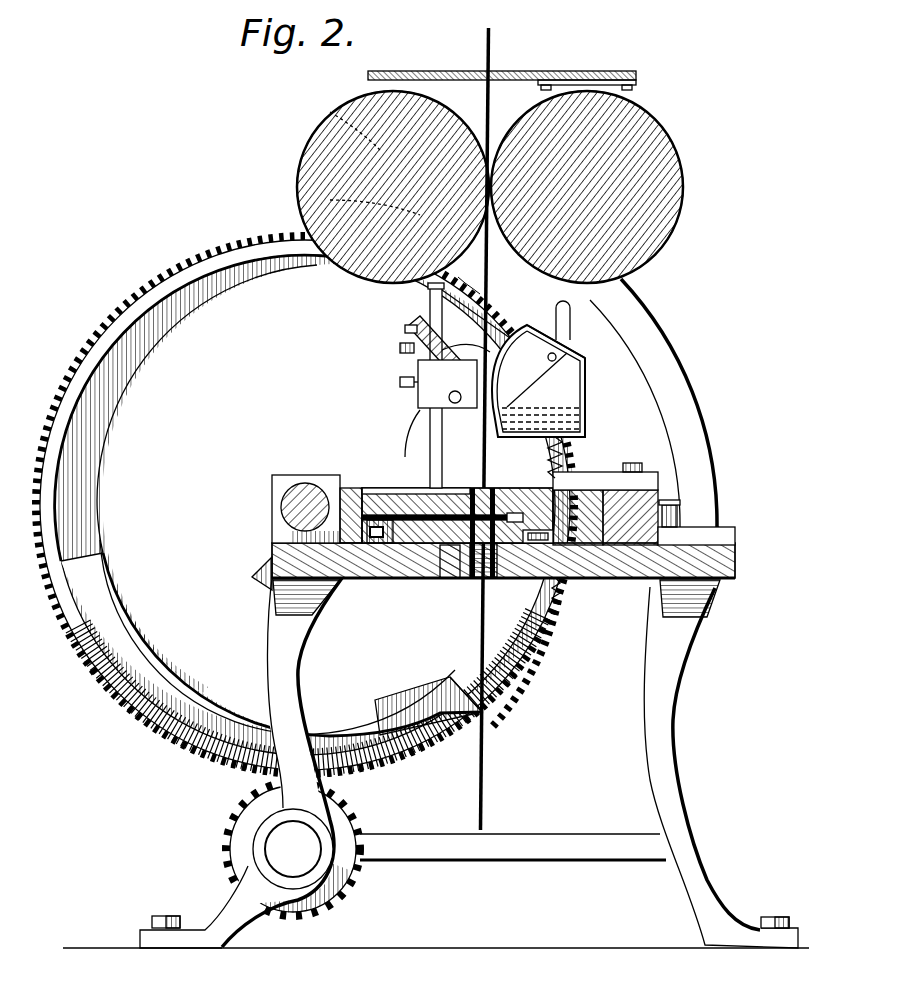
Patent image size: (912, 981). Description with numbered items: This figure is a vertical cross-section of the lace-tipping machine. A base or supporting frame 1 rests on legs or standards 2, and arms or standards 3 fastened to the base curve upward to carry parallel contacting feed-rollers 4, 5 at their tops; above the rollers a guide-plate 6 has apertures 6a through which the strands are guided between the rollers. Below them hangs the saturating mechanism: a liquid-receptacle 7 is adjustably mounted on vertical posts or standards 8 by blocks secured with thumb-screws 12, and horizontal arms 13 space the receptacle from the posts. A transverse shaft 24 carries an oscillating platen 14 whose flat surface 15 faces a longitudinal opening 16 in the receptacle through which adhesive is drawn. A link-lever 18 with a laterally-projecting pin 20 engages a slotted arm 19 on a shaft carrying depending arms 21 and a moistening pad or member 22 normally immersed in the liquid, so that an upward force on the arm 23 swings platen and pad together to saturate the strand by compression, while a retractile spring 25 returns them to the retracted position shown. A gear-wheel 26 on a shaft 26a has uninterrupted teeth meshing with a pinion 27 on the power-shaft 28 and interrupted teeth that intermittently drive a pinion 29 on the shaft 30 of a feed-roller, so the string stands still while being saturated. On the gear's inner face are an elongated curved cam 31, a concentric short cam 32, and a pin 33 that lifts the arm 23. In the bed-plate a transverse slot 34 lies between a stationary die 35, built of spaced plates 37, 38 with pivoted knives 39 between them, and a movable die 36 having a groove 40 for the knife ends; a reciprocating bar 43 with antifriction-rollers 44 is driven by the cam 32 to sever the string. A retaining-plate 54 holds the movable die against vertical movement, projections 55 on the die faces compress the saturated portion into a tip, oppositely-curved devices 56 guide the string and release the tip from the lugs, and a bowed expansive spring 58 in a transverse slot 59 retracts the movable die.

The base or supporting frame 1 is at (273, 593).
The legs or standards 2 is at (280, 665).
The arms or standards 3 is at (689, 377).
The feed-roller 4 is at (305, 150).
The feed-roller 5 is at (683, 172).
The guide-plate 6 is at (420, 71).
The apertures 6a is at (491, 72).
The liquid-receptacle 7 is at (589, 390).
The vertical posts or standards 8 is at (448, 272).
The thumb-screws 12 is at (400, 350).
The horizontal arms 13 is at (400, 383).
The oscillating platen 14 is at (415, 318).
The flat surface 15 is at (489, 278).
The longitudinal opening 16 is at (497, 322).
The link-lever 18 is at (466, 362).
The slotted arm 19 is at (575, 318).
The laterally-projecting pin 20 is at (569, 353).
The depending arms 21 is at (566, 377).
The moistening pad or member 22 is at (589, 410).
The arm 23 is at (420, 440).
The transverse shaft 24 is at (418, 405).
The retractile spring 25 is at (405, 330).
The gear-wheel 26 is at (305, 505).
The shaft 26a is at (297, 484).
The pinion 27 is at (235, 813).
The power-shaft 28 is at (277, 843).
The pinion 29 is at (330, 112).
The shaft 30 is at (330, 200).
The elongated curved cam 31 is at (137, 642).
The concentric short cam 32 is at (262, 560).
The pin 33 is at (400, 472).
The transverse slot 34 is at (540, 657).
The stationary die 35 is at (423, 480).
The movable die 36 is at (659, 503).
The plate 37 is at (465, 488).
The plate 38 is at (340, 478).
The swinging or pivoted knives 39 is at (433, 545).
The groove 40 is at (553, 460).
The longitudinally-reciprocating bar 43 is at (377, 545).
The antifriction-rollers 44 is at (385, 545).
The retaining-plate 54 is at (606, 470).
The projections 55 is at (450, 565).
The oppositely-curved devices 56 is at (495, 488).
The bowed expansive spring 58 is at (556, 583).
The transverse slot 59 is at (553, 540).